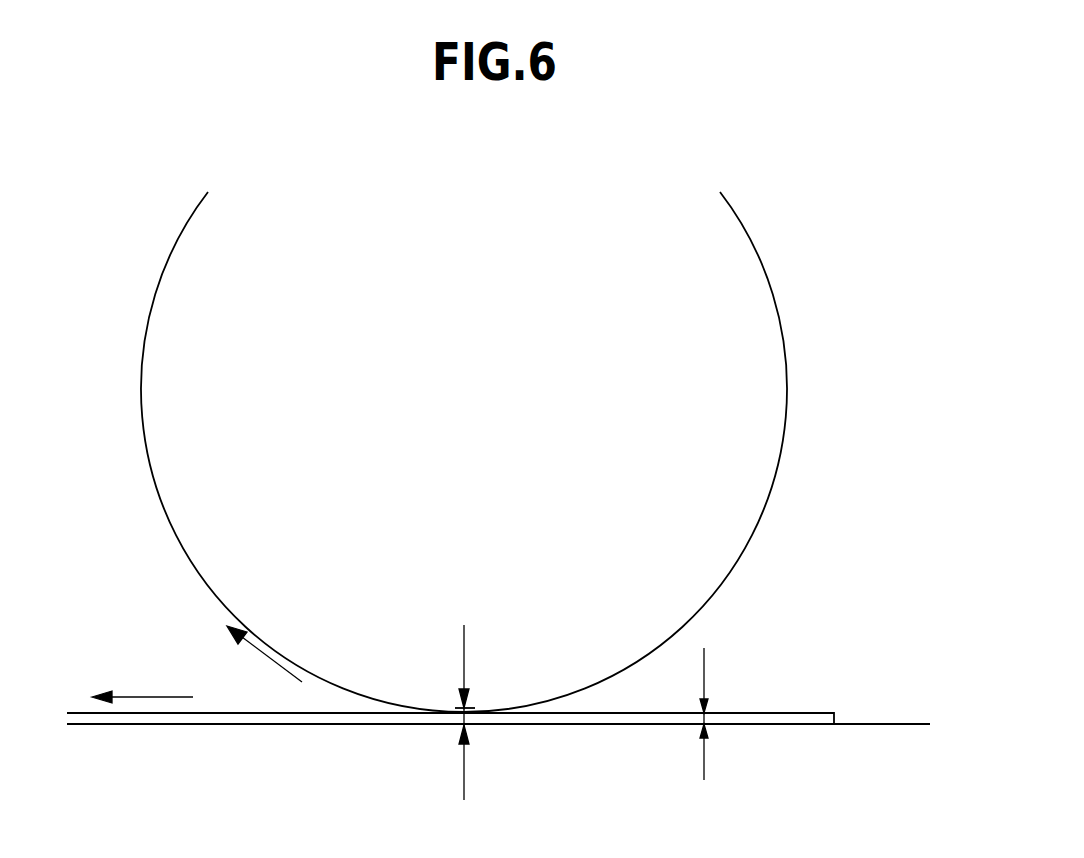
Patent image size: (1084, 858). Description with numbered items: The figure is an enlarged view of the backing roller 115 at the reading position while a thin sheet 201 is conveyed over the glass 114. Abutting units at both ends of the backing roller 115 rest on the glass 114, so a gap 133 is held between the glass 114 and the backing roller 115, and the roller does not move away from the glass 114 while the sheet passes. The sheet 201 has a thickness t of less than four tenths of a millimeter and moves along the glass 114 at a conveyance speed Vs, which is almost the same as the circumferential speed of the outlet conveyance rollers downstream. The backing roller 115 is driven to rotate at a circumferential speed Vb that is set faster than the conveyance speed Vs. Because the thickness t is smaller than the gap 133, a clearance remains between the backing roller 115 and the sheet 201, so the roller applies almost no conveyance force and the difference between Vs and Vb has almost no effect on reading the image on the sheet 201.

The backing roller 115 is at (182, 543).
The sheet 201 is at (790, 713).
The glass 114 is at (888, 724).
The gap 133 is at (485, 717).
The thickness t is at (713, 714).
The conveyance speed Vs is at (145, 697).
The circumferential speed Vb is at (260, 658).